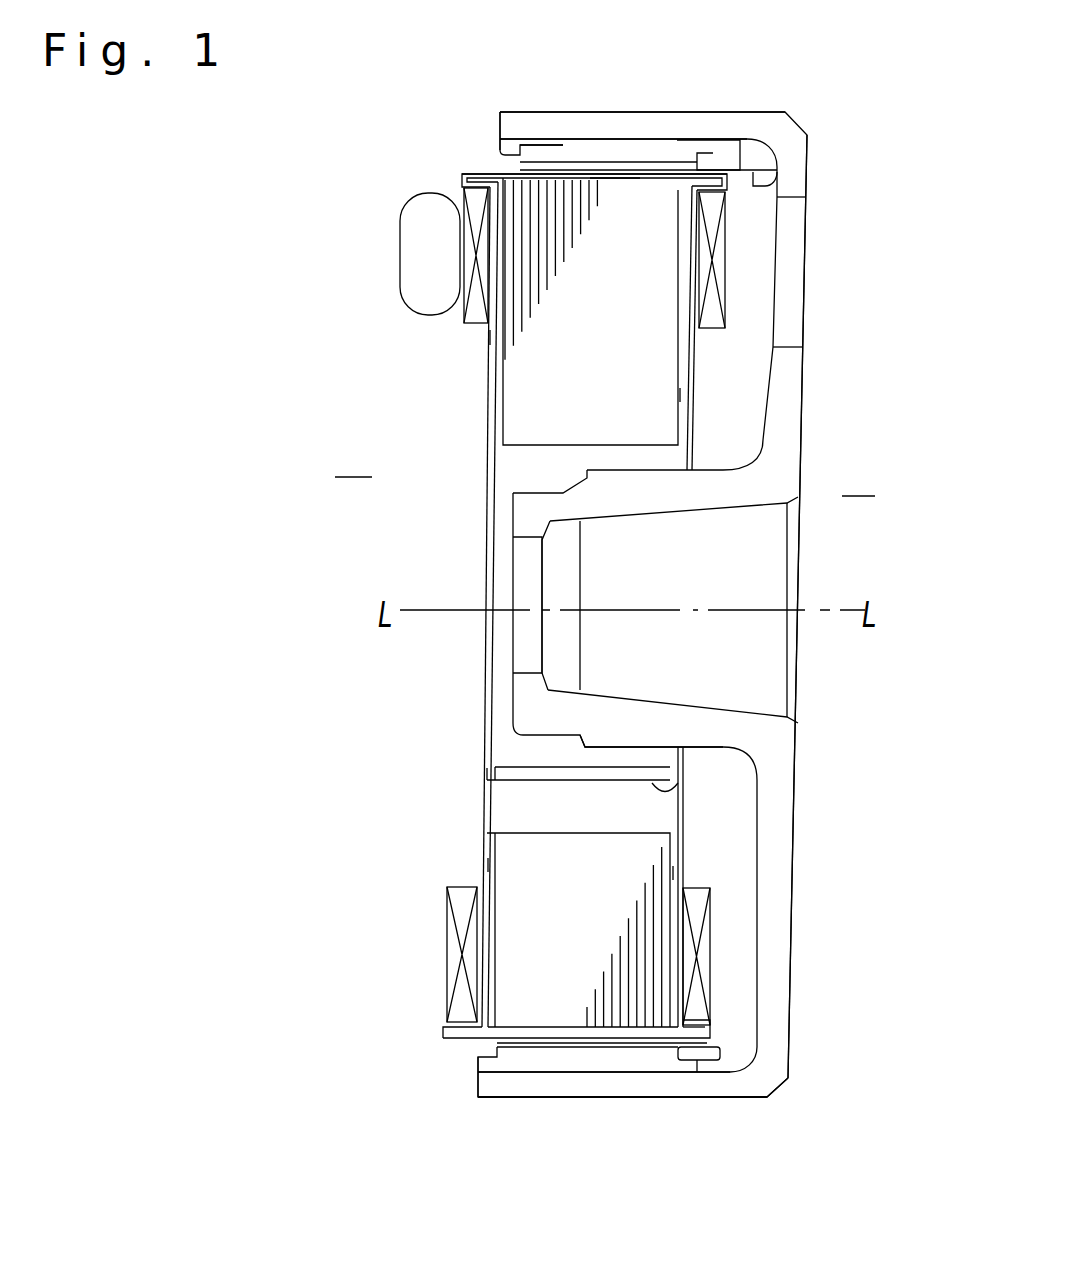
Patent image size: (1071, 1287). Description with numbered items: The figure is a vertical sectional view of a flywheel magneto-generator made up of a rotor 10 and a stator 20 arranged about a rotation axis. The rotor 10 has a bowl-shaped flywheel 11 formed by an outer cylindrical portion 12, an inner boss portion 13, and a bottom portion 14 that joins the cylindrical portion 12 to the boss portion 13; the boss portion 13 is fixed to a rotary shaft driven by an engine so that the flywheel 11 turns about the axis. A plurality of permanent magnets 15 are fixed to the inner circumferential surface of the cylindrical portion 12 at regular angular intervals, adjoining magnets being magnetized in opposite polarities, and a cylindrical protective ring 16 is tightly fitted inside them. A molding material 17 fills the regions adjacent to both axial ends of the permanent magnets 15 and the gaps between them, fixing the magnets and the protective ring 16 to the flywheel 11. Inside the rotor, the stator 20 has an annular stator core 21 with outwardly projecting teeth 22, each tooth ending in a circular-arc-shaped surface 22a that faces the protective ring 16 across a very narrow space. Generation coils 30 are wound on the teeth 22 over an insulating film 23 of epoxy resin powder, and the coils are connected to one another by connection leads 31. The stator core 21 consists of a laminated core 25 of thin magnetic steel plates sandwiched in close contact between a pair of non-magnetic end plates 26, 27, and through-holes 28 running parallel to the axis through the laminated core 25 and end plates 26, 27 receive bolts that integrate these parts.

The rotor 10 is at (805, 478).
The flywheel 11 is at (777, 1090).
The cylindrical portion 12 is at (677, 123).
The boss portion 13 is at (620, 503).
The bottom portion 14 is at (792, 367).
The permanent magnets 15 is at (592, 147).
The protective ring 16 is at (683, 155).
The molding material 17 is at (512, 145).
The stator 20 is at (470, 450).
The stator core 21 is at (532, 357).
The teeth 22 is at (632, 197).
The circular-arc-shaped surface 22a is at (608, 177).
The insulating film 23 is at (478, 148).
The laminated core 25 is at (563, 403).
The end plate 26 is at (490, 337).
The end plate 27 is at (680, 395).
The through-holes 28 is at (673, 790).
The generation coils 30 is at (470, 197).
The connection leads 31 is at (412, 265).